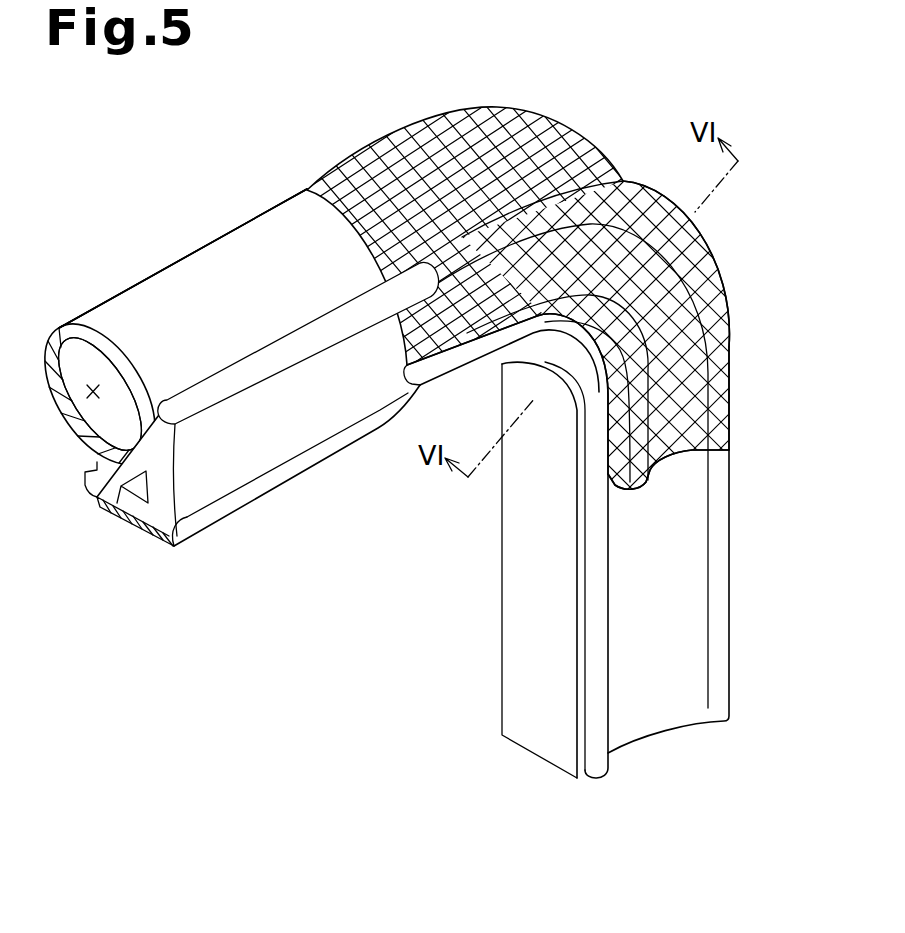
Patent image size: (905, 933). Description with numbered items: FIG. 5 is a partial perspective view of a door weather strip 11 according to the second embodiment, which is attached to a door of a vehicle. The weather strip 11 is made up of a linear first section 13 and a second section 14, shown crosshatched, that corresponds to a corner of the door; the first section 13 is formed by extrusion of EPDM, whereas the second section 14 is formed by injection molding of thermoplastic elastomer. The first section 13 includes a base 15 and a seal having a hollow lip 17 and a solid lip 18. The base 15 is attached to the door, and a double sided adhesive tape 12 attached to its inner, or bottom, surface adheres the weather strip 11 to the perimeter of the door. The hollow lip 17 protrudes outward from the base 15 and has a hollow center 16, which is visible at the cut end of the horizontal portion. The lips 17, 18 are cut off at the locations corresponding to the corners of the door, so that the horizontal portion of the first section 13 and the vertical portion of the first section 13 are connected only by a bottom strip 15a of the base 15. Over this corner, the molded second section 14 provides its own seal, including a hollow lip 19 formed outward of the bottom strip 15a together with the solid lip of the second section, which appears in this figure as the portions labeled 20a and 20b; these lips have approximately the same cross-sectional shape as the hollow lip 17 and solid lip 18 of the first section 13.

The door weather strip 11 is at (210, 201).
The double sided adhesive tape 12 is at (110, 517).
The first section 13 is at (150, 253).
The second section 14 is at (588, 80).
The base 15 is at (85, 485).
The bottom strip 15a is at (173, 540).
The hollow center 16 is at (78, 393).
The hollow lip 17 is at (103, 309).
The solid lip 18 is at (260, 377).
The hollow lip 19 is at (395, 130).
The second mesh portion 20a is at (713, 260).
The third mesh portion 20b is at (640, 486).